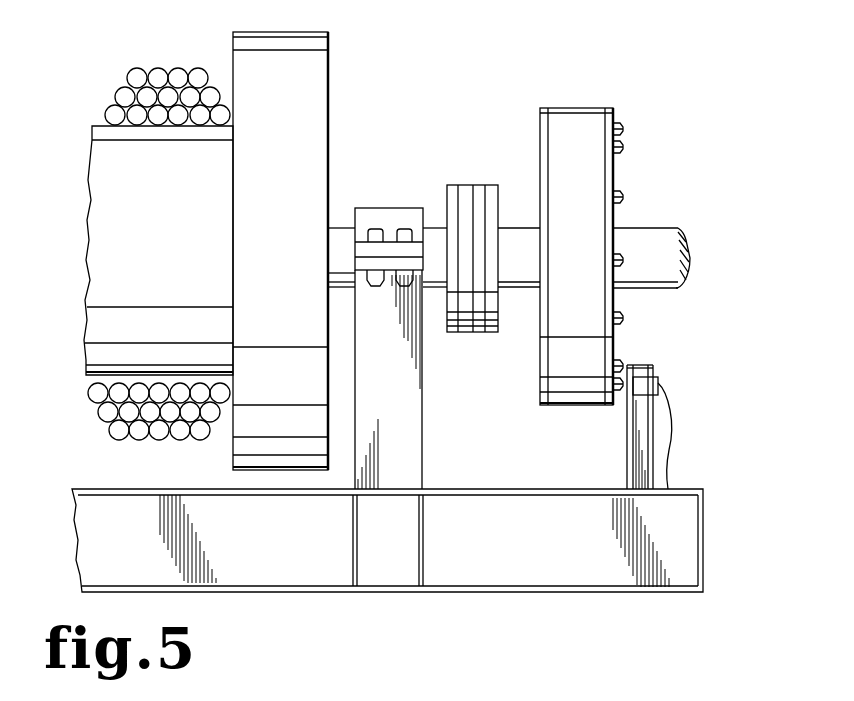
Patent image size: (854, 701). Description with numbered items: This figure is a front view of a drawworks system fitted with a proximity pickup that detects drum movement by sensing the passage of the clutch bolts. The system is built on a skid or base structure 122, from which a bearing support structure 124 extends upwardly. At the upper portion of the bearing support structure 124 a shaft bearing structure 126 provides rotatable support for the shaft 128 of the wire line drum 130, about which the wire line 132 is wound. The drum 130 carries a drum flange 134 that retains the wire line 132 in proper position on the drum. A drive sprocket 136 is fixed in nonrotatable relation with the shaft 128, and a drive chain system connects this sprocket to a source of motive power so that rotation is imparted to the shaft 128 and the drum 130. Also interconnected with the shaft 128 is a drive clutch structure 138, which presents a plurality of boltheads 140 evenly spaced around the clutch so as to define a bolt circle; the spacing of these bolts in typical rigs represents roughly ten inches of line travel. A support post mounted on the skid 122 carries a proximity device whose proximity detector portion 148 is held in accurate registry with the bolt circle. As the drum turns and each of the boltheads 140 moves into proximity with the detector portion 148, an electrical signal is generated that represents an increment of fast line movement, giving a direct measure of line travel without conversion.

The skid or base structure 122 is at (681, 565).
The bearing support structure 124 is at (410, 420).
The shaft bearing structure 126 is at (388, 217).
The shaft 128 is at (672, 245).
The wire line drum 130 is at (105, 285).
The wire line 132 is at (155, 80).
The drum flange 134 is at (310, 98).
The drive sprocket 136 is at (466, 332).
The drive clutch structure 138 is at (573, 123).
The boltheads 140 is at (623, 260).
The proximity detector portion 148 is at (622, 387).